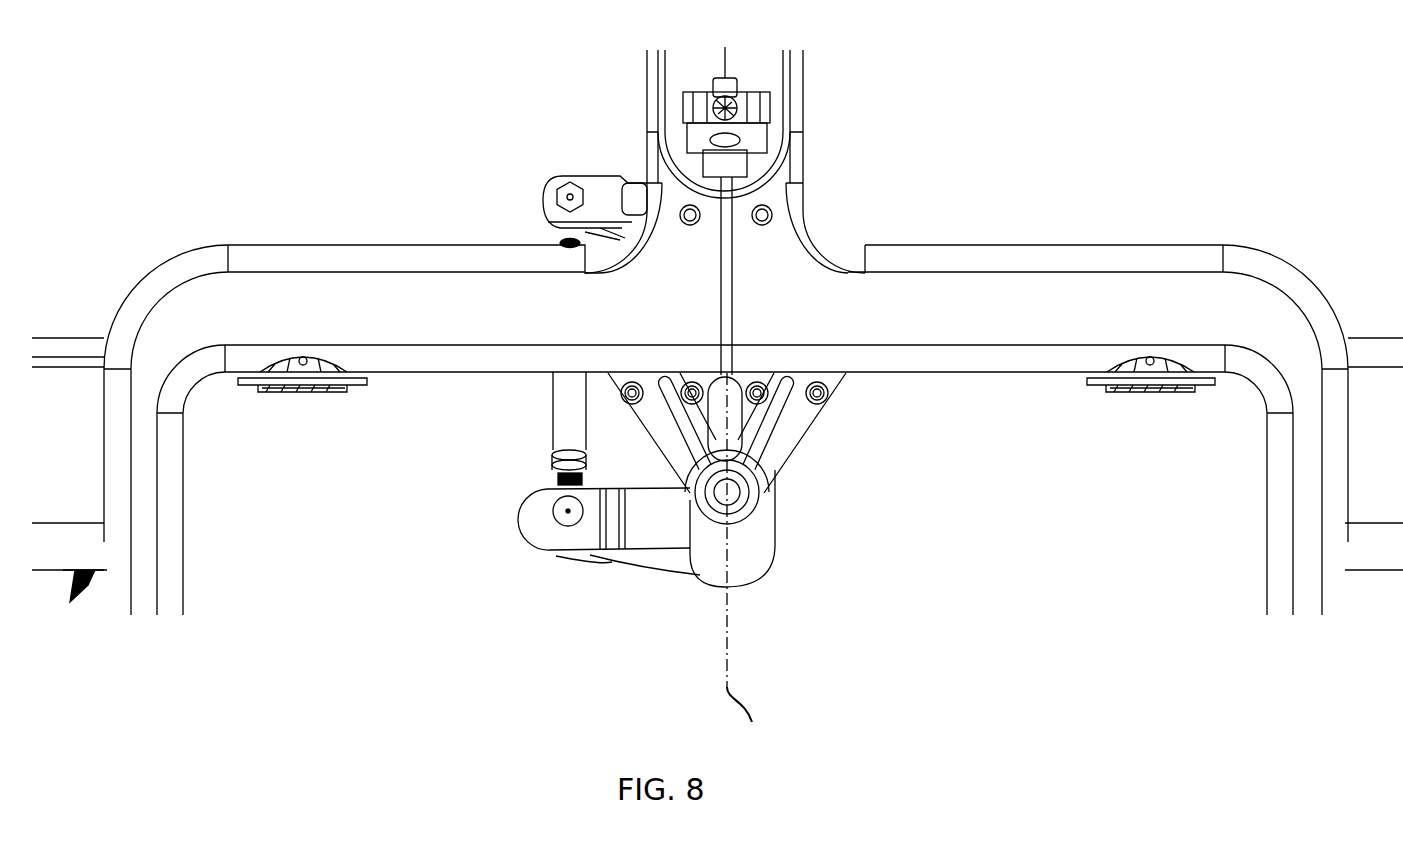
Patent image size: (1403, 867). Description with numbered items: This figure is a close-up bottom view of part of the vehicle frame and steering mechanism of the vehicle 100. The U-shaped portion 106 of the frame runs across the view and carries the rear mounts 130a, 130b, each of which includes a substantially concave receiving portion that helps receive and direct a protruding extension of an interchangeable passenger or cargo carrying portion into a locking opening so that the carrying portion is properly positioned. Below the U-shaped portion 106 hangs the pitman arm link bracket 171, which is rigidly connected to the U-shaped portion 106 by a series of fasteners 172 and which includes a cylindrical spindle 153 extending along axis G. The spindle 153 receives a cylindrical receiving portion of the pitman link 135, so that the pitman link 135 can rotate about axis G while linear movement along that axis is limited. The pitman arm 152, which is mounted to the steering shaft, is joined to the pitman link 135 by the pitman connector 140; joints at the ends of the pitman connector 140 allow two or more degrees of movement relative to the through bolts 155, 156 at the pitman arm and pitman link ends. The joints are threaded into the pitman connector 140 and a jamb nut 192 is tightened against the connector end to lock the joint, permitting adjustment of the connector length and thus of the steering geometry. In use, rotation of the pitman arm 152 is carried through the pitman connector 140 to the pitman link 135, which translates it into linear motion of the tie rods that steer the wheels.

The fluid control system 100 is at (970, 710).
The U-shaped portion 106 is at (322, 250).
The rear mount 130a is at (1142, 392).
The rear mount 130b is at (313, 392).
The pitman link 135 is at (668, 550).
The pitman connector 140 is at (567, 418).
The pitman arm 152 is at (617, 197).
The cylindrical spindle 153 is at (712, 503).
The through bolt 155 is at (567, 198).
The through bolt 156 is at (565, 522).
The pitman arm link bracket 171 is at (752, 435).
The fastener 172 is at (820, 400).
The jamb nut 192 is at (558, 483).